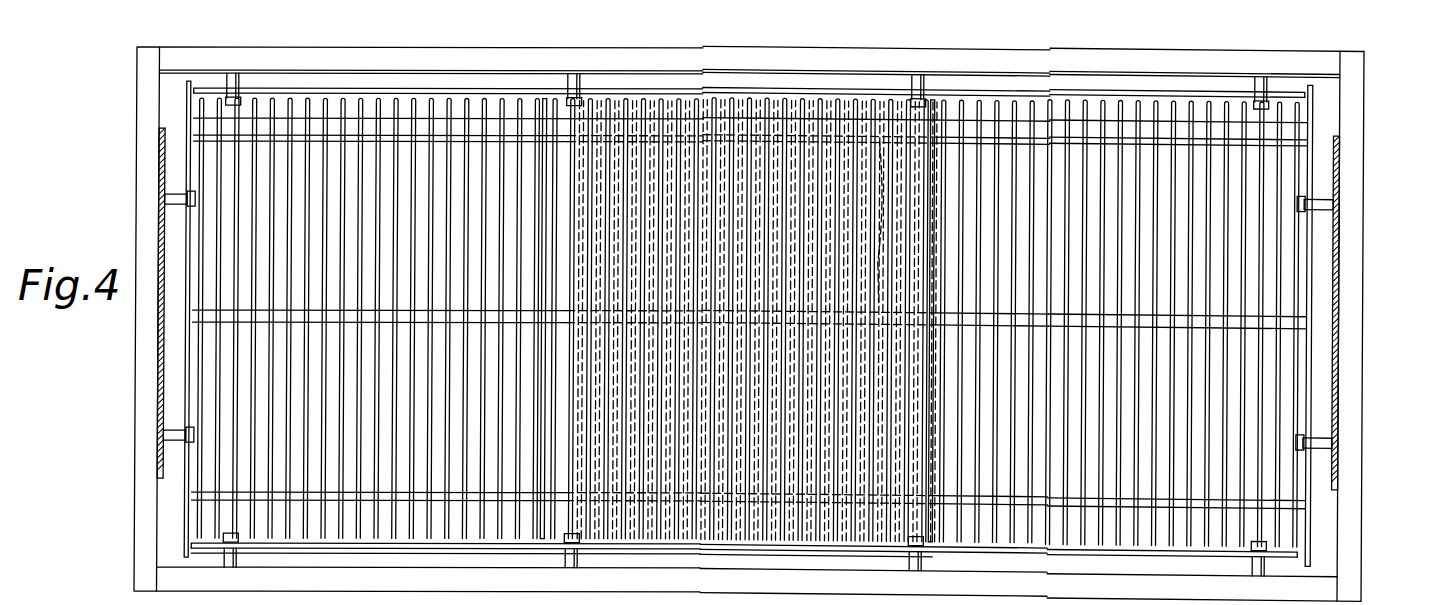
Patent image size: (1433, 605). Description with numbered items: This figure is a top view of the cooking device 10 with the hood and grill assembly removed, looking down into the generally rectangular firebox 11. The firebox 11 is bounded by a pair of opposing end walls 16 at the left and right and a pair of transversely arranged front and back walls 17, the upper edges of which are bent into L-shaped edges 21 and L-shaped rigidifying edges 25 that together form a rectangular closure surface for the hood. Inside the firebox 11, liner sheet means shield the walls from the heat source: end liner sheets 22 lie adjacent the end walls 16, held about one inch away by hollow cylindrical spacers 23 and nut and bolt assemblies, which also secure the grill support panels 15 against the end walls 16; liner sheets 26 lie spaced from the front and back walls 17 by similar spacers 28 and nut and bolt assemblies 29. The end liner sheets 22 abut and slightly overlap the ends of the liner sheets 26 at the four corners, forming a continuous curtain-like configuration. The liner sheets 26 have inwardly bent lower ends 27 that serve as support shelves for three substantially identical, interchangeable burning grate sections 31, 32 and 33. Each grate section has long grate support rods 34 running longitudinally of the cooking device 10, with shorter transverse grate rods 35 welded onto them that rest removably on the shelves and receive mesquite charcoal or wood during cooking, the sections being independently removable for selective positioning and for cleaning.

The cooking device 10 is at (100, 499).
The firebox 11 is at (1366, 167).
The grill support panels 15 is at (160, 348).
The end walls 16 is at (168, 518).
The front and back walls 17 is at (1196, 74).
The L-shaped edges 21 is at (150, 121).
The end liner sheets 22 is at (186, 541).
The spacers 23 is at (176, 188).
The L-shaped rigidifying edges 25 is at (210, 56).
The liner sheets 26 is at (364, 560).
The lower bent ends 27 is at (522, 108).
The spacers 28 is at (229, 79).
The nut and bolt assemblies 29 is at (233, 567).
The burning grate section 31 is at (230, 236).
The burning grate section 32 is at (783, 131).
The burning grate section 33 is at (1272, 172).
The grate support rods 34 is at (230, 318).
The transverse grate rods 35 is at (461, 124).